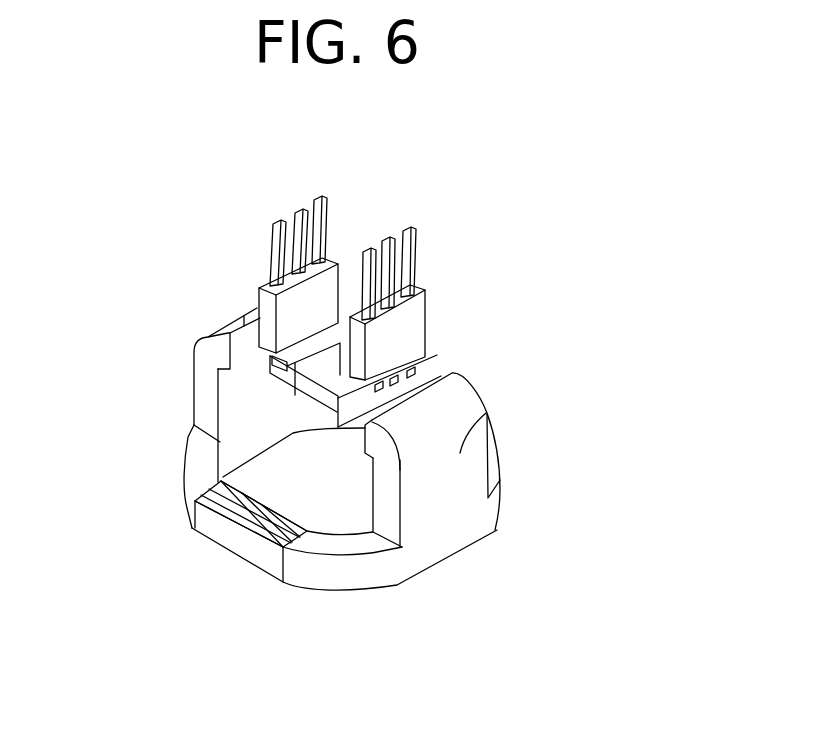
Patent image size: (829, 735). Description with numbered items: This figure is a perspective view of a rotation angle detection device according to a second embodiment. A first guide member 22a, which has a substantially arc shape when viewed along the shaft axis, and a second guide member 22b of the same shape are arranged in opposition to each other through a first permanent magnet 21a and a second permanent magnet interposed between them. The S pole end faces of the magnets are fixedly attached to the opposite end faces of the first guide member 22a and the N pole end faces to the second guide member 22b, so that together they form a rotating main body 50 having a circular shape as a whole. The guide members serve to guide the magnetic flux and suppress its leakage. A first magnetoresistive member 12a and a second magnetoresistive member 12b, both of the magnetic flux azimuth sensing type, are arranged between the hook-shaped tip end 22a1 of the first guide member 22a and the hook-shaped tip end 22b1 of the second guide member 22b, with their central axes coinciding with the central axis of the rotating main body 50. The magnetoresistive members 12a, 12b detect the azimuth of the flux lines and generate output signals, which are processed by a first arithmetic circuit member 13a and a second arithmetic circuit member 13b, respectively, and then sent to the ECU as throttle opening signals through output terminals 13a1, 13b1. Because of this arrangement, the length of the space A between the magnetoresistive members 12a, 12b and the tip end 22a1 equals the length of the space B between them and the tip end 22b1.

The rotating main body 50 is at (428, 585).
The first permanent magnet 21a is at (238, 536).
The first guide member 22a is at (489, 412).
The hook-shaped tip end of the first guide member 22a1 is at (526, 416).
The second guide member 22b is at (208, 368).
The hook-shaped tip end of the second guide member 22b1 is at (247, 318).
The first magnetoresistive member 12a is at (293, 393).
The second magnetoresistive member 12b is at (353, 384).
The first arithmetic circuit member 13a is at (424, 293).
The output terminal 13a1 is at (412, 238).
The second arithmetic circuit member 13b is at (325, 292).
The output terminal 13b1 is at (294, 212).
The space A is at (423, 372).
The space B is at (230, 334).